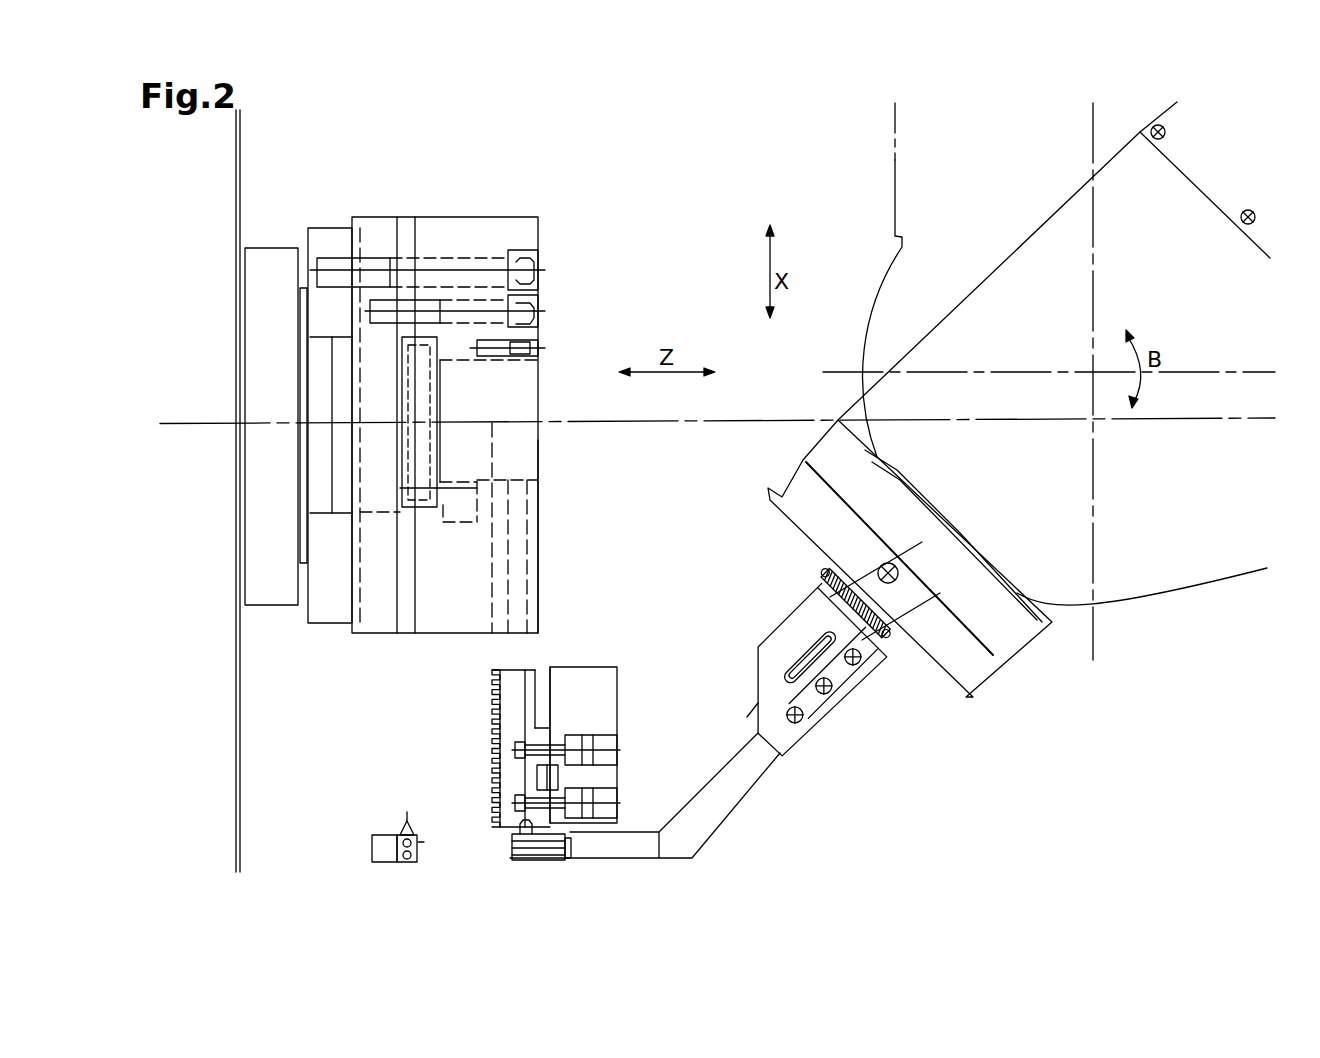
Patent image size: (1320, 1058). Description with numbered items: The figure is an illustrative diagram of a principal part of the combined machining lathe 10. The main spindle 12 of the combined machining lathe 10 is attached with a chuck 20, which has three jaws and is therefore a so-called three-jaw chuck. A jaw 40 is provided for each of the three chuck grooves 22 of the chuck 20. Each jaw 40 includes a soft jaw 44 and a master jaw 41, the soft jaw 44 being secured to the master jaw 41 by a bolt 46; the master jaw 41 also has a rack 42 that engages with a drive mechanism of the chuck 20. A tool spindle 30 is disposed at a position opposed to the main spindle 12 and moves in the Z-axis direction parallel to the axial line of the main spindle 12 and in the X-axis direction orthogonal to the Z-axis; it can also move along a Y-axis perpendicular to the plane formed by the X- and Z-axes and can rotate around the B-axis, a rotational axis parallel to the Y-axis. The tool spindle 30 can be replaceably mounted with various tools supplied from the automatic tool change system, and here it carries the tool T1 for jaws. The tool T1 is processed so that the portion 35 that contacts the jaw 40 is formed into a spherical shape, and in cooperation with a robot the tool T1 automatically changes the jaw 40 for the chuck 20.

The combined machining lathe 10 is at (705, 162).
The main spindle 12 is at (270, 258).
The chuck 20 is at (447, 232).
The chuck groove 22 is at (538, 553).
The tool spindle 30 is at (1050, 570).
The portion in contact with the jaw 35 is at (407, 815).
The jaw 40 is at (548, 726).
The master jaw 41 is at (522, 698).
The rack 42 is at (495, 748).
The soft jaw 44 is at (600, 700).
The bolt 46 is at (590, 746).
The tool for jaws T1 is at (730, 788).